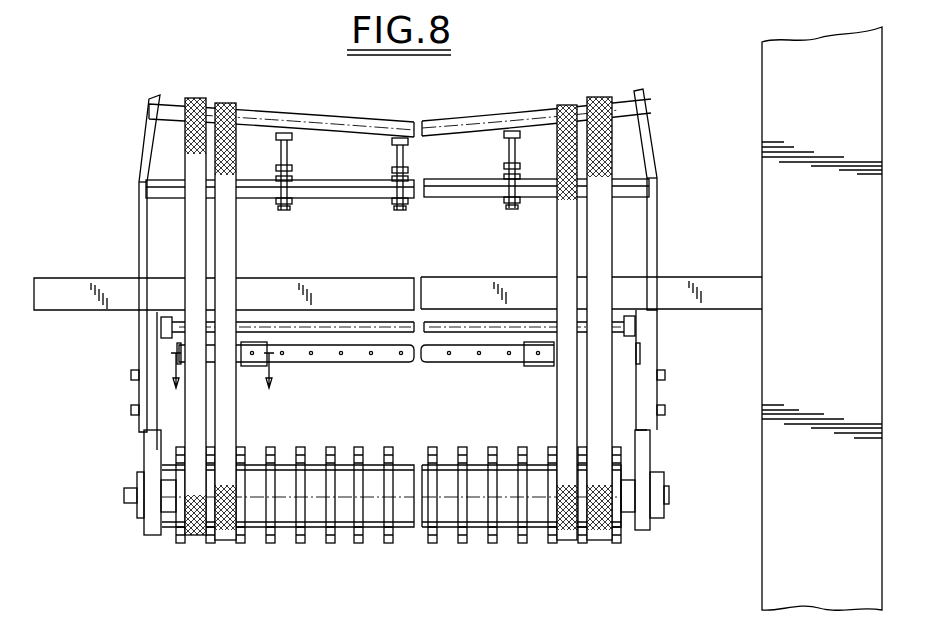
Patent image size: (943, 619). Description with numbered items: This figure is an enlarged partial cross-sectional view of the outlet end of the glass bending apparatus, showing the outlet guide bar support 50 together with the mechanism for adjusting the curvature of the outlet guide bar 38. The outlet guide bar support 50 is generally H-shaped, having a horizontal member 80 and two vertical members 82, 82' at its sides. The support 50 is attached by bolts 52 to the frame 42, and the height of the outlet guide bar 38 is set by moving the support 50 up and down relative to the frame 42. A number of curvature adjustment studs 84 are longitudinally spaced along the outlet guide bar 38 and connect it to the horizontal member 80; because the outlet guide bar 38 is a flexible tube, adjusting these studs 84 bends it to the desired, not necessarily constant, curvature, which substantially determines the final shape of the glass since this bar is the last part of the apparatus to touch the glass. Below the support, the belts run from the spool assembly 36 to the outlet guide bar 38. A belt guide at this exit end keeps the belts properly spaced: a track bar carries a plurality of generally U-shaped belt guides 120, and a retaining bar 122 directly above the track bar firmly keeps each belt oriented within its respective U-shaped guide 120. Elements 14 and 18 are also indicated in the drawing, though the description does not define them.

The nozzle positions 14 is at (223, 386).
The spray bar 18 is at (372, 365).
The spool assembly 36 is at (385, 547).
The outlet guide bar 38 is at (472, 118).
The frame 42 is at (650, 462).
The outlet guide bar support 50 is at (658, 240).
The bolts 52 is at (668, 376).
The horizontal member 80 is at (377, 200).
The vertical member 82 is at (126, 263).
The vertical member 82' is at (672, 199).
The curvature adjustment studs 84 is at (536, 190).
The U-shaped belt guides 120 is at (546, 367).
The retaining bar 122 is at (503, 333).